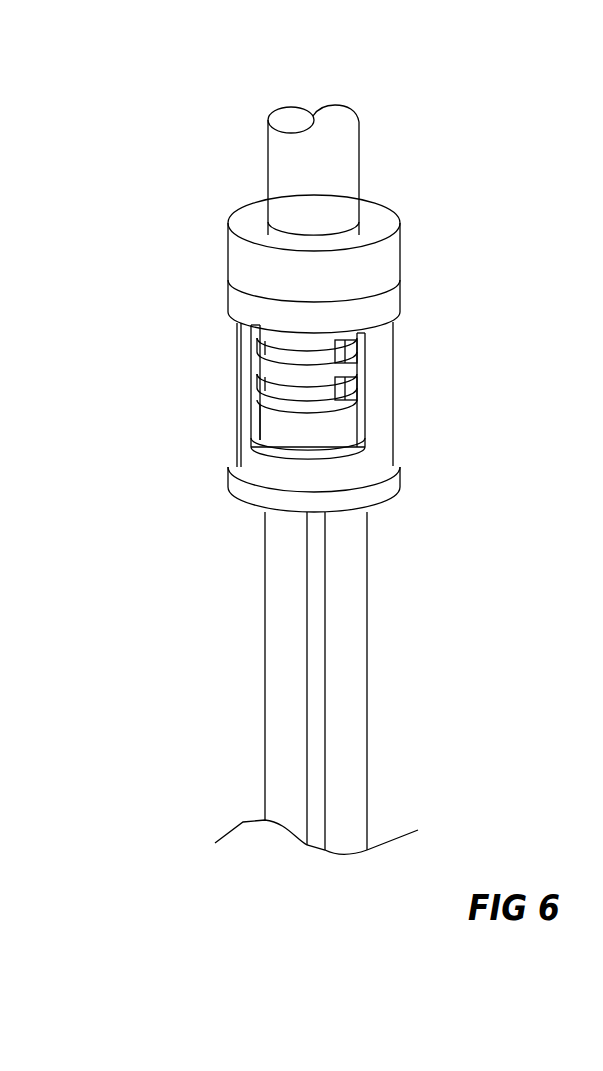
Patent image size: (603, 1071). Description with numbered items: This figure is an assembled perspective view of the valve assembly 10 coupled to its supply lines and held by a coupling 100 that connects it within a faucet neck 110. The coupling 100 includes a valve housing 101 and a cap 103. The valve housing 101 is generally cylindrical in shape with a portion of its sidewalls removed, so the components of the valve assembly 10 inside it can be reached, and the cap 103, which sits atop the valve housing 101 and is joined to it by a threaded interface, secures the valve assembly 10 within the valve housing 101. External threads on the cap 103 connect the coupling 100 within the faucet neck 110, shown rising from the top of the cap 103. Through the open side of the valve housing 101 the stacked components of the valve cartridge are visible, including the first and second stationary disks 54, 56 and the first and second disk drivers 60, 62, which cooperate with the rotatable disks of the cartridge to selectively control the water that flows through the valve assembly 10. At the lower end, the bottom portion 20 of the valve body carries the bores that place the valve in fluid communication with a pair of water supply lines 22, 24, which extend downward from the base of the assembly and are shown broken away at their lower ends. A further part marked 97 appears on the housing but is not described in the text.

The valve assembly 10 is at (300, 443).
The bottom portion 20 is at (268, 432).
The water supply line 22 is at (277, 694).
The water supply line 24 is at (352, 740).
The first stationary disk 54 is at (262, 392).
The second stationary disk 56 is at (262, 348).
The first disk driver 60 is at (262, 372).
The second disk driver 62 is at (262, 335).
The collar rim 97 is at (393, 325).
The coupling 100 is at (430, 370).
The valve housing 101 is at (400, 448).
The cap 103 is at (224, 290).
The faucet neck 110 is at (345, 178).